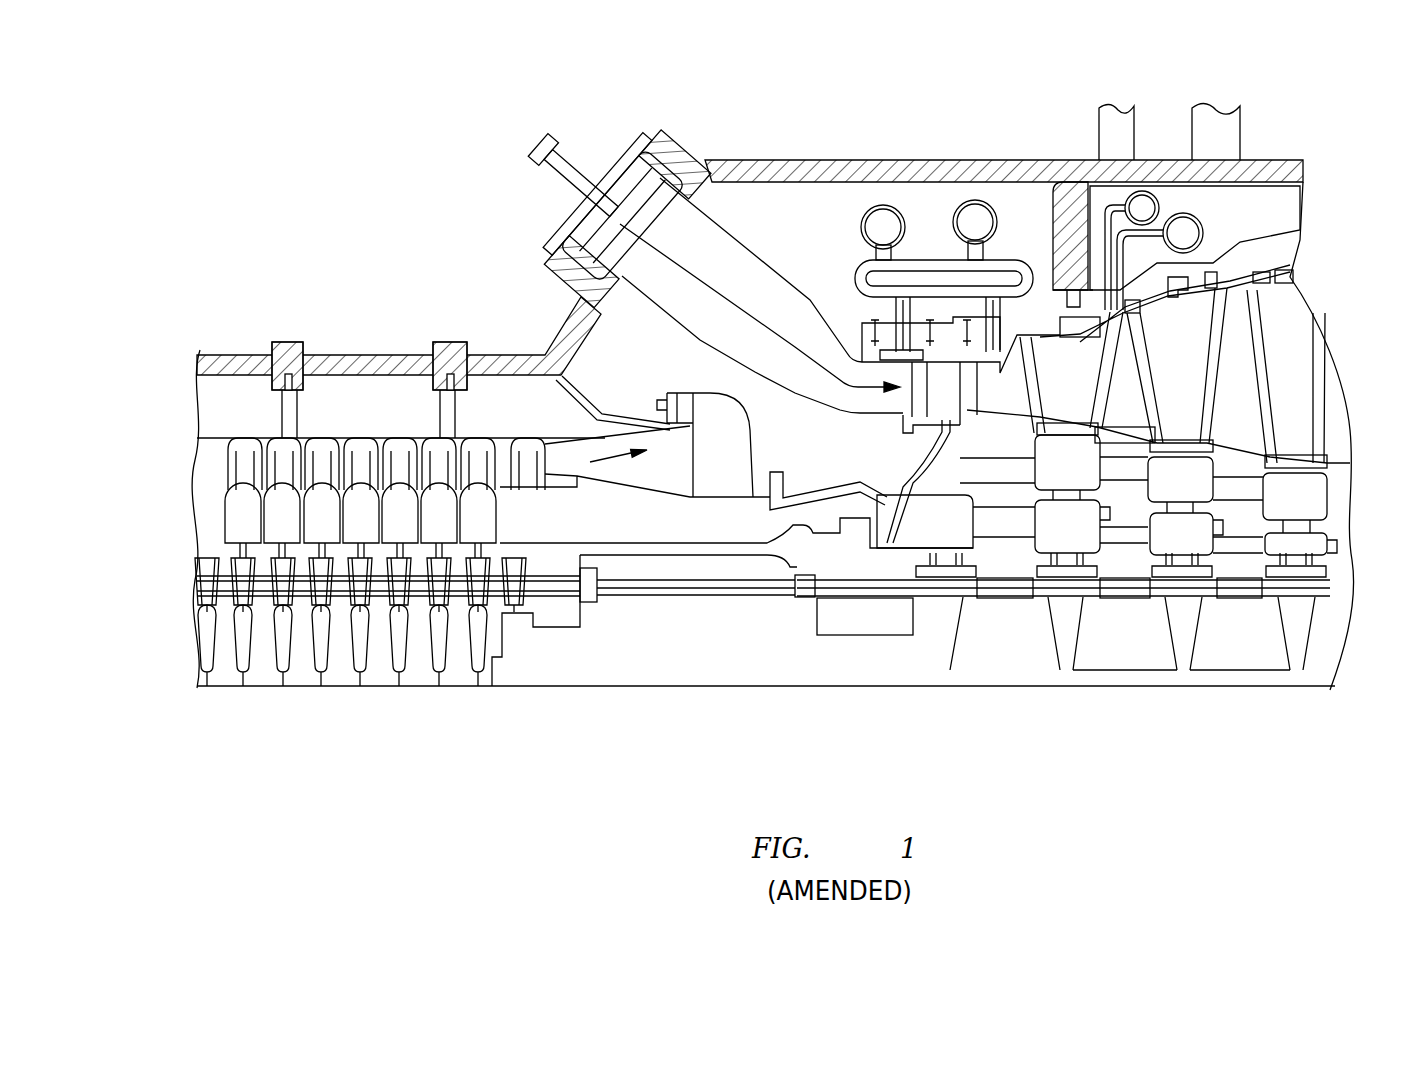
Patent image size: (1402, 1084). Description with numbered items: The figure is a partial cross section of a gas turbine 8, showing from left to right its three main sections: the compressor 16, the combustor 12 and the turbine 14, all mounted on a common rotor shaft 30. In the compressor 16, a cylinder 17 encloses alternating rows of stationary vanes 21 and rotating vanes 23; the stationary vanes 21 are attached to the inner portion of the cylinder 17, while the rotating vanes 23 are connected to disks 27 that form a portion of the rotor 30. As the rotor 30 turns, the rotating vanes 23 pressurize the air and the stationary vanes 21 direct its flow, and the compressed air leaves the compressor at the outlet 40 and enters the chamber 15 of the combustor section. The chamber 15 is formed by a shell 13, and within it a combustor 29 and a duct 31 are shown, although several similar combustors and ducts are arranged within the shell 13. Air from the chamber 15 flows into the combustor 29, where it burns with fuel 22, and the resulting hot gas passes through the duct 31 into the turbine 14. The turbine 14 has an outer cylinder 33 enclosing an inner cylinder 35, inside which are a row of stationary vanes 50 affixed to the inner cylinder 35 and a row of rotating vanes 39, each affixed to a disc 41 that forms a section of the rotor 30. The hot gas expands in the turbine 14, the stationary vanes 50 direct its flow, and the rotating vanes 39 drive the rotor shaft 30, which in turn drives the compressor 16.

The gas turbine 8 is at (603, 101).
The combustor 12 is at (567, 690).
The shell 13 is at (783, 168).
The turbine 14 is at (1259, 207).
The chamber 15 is at (813, 207).
The compressor 16 is at (187, 377).
The cylinder 17 is at (387, 357).
The stationary vanes 21 is at (245, 447).
The fuel 22 is at (526, 133).
The rotating vanes 23 is at (343, 447).
The disks 27 is at (263, 550).
The combustor 29 is at (643, 207).
The rotor shaft 30 is at (707, 548).
The duct 31 is at (690, 240).
The outer cylinder 33 is at (1160, 160).
The inner cylinder 35 is at (1070, 317).
The rotating vanes 39 is at (1013, 393).
The air outlet 40 is at (611, 457).
The disc 41 is at (1008, 657).
The stationary vanes 50 is at (957, 393).